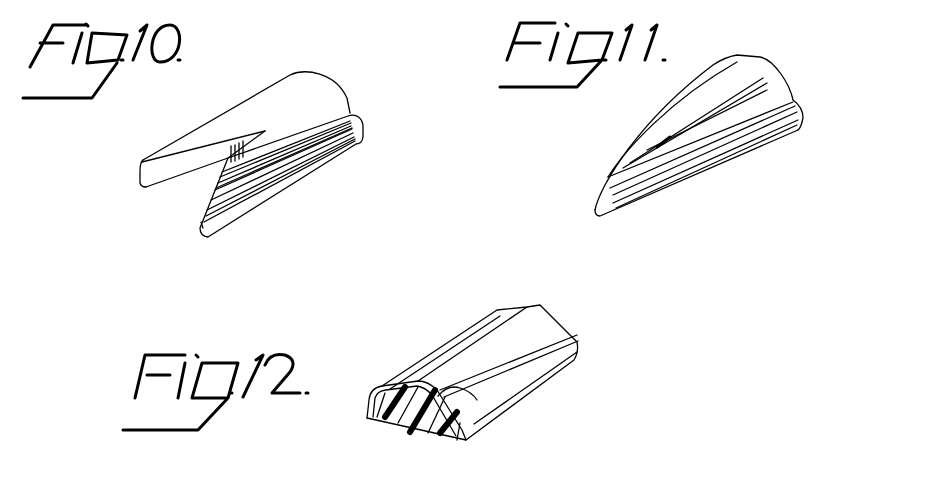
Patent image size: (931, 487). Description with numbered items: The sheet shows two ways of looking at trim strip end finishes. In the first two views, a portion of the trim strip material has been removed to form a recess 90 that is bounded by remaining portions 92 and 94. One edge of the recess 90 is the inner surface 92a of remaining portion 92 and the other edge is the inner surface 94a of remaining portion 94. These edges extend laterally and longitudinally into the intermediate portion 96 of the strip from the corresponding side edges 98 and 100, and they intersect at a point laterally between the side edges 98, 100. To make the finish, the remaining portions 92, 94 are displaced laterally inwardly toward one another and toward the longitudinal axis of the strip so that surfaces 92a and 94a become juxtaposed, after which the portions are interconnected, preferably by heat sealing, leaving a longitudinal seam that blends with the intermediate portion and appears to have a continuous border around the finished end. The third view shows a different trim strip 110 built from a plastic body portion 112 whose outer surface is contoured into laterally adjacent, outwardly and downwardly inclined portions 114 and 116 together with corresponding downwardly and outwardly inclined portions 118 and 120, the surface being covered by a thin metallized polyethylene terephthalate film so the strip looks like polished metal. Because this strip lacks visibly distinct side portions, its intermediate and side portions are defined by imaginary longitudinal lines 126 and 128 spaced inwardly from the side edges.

In FIG. 10, the recess 90 is at (195, 190).
In FIG. 10, the remaining portion 92 is at (192, 143).
In FIG. 11, the remaining portion 92 is at (642, 140).
In FIG. 10, the inner surface 92a is at (180, 173).
In FIG. 10, the remaining portion 94 is at (250, 163).
In FIG. 11, the remaining portion 94 is at (668, 157).
In FIG. 10, the inner surface 94a is at (207, 193).
In FIG. 10, the intermediate portion 96 is at (295, 122).
In FIG. 11, the intermediate portion 96 is at (708, 122).
In FIG. 10, the side edge 98 is at (222, 118).
In FIG. 11, the side edge 98 is at (642, 119).
In FIG. 10, the side edge 100 is at (240, 210).
In FIG. 11, the side edge 100 is at (757, 143).
In FIG. 12, the trim strip 110 is at (438, 326).
In FIG. 12, the plastic body portion 112 is at (412, 413).
In FIG. 12, the outwardly and downwardly inclined portion 114 is at (463, 390).
In FIG. 12, the outwardly and downwardly inclined portion 116 is at (400, 383).
In FIG. 12, the downwardly and outwardly inclined portion 118 is at (462, 423).
In FIG. 12, the downwardly and outwardly inclined portion 120 is at (373, 398).
In FIG. 12, the imaginary longitudinal line 126 is at (533, 343).
In FIG. 12, the imaginary longitudinal line 128 is at (443, 352).